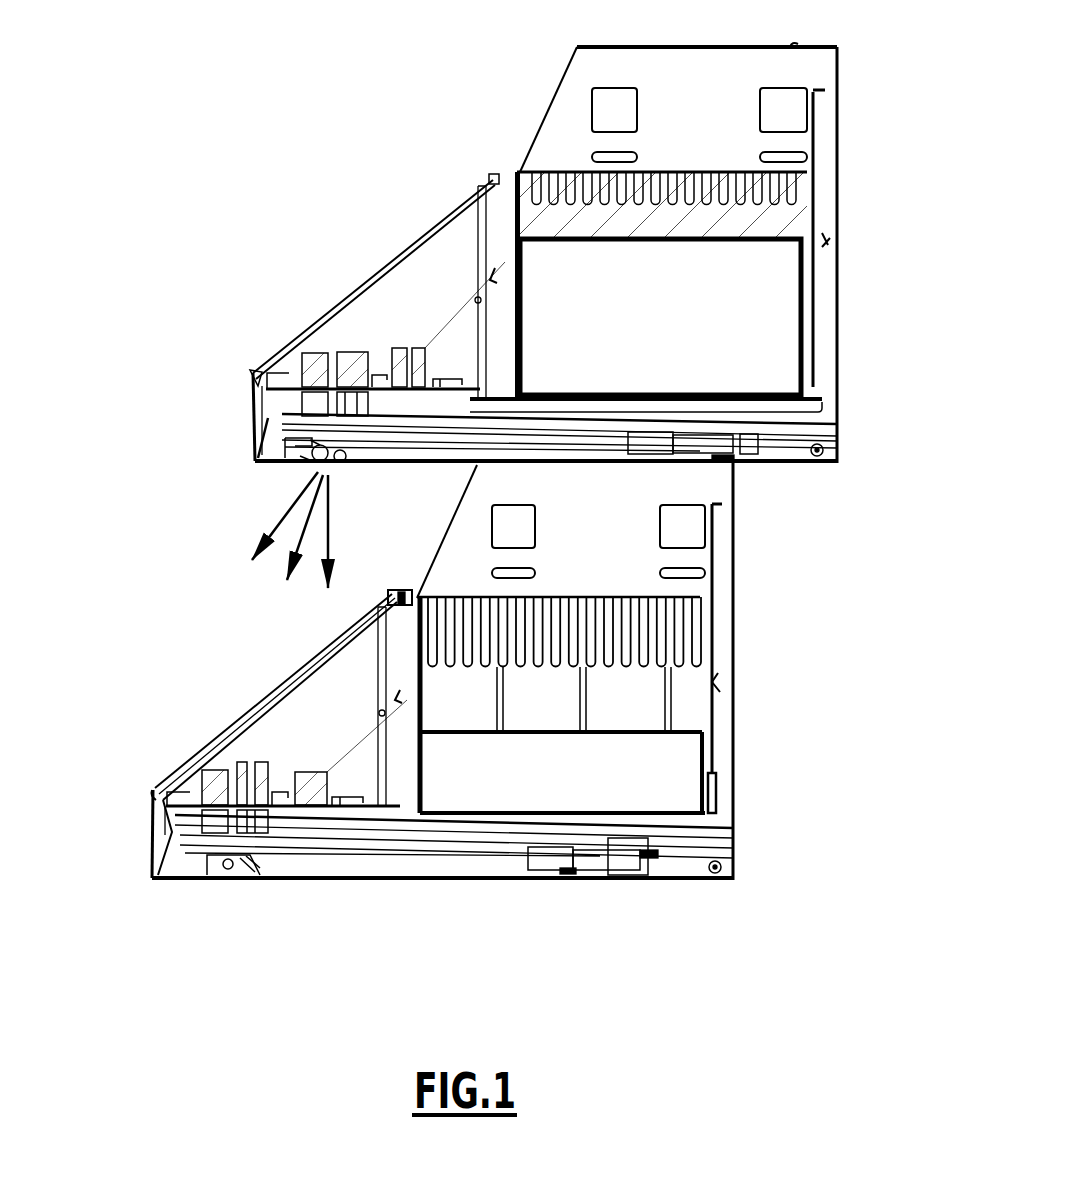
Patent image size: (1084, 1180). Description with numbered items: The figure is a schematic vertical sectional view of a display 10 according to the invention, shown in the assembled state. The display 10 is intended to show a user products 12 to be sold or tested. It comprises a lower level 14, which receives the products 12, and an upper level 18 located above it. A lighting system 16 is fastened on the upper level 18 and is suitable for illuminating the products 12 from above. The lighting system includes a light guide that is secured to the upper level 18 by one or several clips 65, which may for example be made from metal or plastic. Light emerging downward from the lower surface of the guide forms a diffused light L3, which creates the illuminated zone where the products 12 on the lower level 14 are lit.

The display 10 is at (116, 344).
The upper level 18 is at (310, 280).
The lower level 14 is at (220, 676).
The lighting system 16 is at (303, 450).
The clip 65 is at (338, 462).
The diffused light L3 is at (281, 521).
The products 12 is at (212, 803).